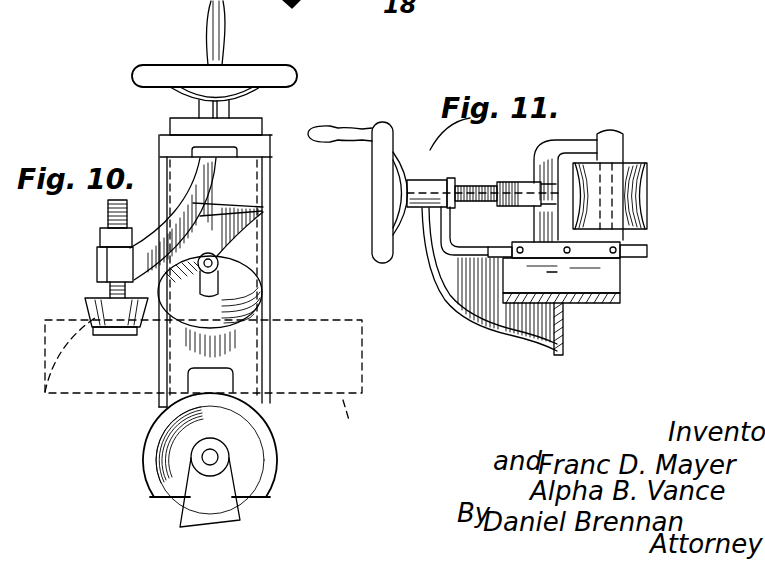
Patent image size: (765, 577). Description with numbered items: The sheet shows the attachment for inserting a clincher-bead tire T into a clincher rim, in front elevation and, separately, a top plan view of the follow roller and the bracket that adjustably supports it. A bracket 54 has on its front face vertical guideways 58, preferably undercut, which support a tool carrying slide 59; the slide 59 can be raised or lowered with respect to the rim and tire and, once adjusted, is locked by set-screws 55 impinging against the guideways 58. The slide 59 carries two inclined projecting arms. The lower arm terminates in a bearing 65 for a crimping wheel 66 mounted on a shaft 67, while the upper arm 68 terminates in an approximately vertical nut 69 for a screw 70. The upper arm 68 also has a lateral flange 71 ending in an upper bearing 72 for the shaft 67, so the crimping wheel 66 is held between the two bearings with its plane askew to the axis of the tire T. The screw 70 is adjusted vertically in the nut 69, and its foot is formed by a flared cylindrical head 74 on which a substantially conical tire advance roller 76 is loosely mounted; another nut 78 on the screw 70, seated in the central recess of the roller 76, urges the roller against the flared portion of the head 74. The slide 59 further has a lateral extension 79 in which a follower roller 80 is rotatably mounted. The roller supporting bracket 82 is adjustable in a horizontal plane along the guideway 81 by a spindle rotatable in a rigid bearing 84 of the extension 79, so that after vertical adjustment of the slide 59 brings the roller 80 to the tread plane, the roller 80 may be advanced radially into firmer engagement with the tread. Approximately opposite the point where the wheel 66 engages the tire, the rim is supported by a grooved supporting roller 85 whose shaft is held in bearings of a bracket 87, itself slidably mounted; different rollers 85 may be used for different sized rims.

In FIG. 10, the bearing 65 is at (145, 86).
In FIG. 10, the vertical guideways 58 is at (172, 137).
In FIG. 10, the tool carrying slide 59 is at (252, 182).
In FIG. 10, the set-screws 55 is at (168, 162).
In FIG. 10, the upper arm 68 is at (188, 190).
In FIG. 10, the shaft 67 is at (245, 257).
In FIG. 10, the lateral flange 71 is at (258, 227).
In FIG. 10, the upper bearing 72 is at (226, 272).
In FIG. 10, the crimping wheel 66 is at (240, 292).
In FIG. 10, the screw 70 is at (108, 223).
In FIG. 10, the nut 69 is at (100, 266).
In FIG. 10, the nut 78 is at (90, 300).
In FIG. 10, the tire advance roller 76 is at (86, 302).
In FIG. 10, the cylindrical head 74 is at (198, 372).
In FIG. 10, the tire T is at (344, 438).
In FIG. 10, the bracket 54 is at (158, 398).
In FIG. 10, the supporting roller 85 is at (272, 441).
In FIG. 11, the supporting roller 85 is at (478, 200).
In FIG. 10, the bracket 87 is at (240, 520).
In FIG. 11, the rigid bearing 84 is at (448, 181).
In FIG. 11, the roller supporting bracket 82 is at (573, 147).
In FIG. 11, the follower roller 80 is at (647, 166).
In FIG. 11, the guideway 81 is at (647, 249).
In FIG. 11, the lateral extension 79 is at (560, 355).